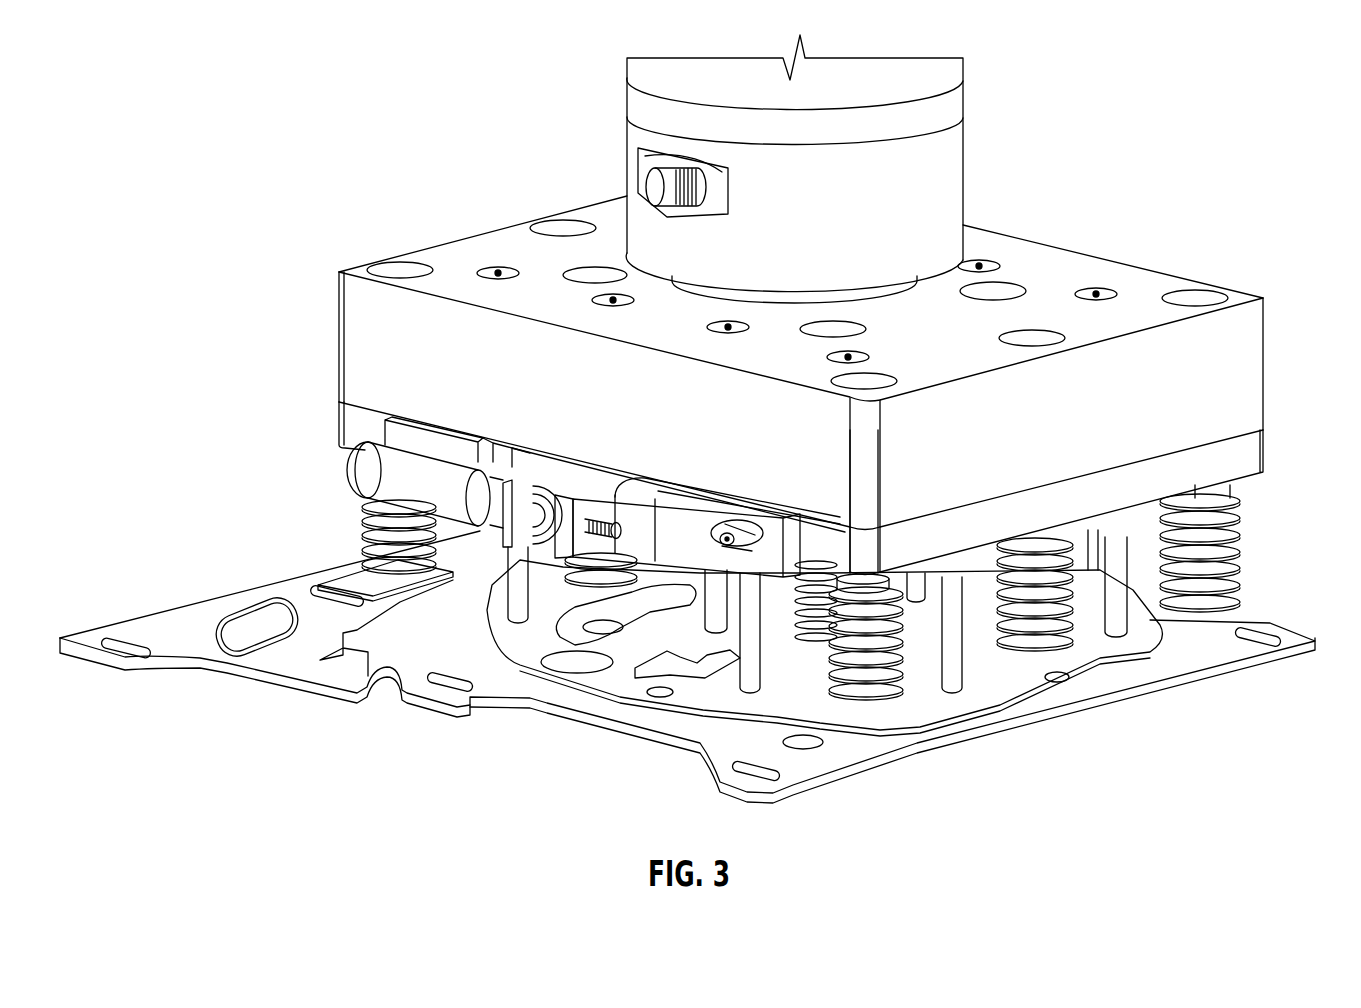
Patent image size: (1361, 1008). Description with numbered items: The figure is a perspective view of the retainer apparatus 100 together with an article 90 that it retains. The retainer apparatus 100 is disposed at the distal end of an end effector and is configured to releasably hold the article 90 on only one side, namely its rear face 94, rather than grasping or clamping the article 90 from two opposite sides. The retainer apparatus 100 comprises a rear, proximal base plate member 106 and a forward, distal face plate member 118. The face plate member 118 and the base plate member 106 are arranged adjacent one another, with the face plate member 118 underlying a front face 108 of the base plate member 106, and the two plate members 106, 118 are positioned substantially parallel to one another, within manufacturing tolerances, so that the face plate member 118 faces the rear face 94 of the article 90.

The retainer apparatus 100 is at (295, 203).
The base plate member 106 is at (356, 363).
The face plate member 118 is at (356, 425).
The front face 108 is at (1215, 441).
The article 90 is at (195, 686).
The rear face 94 is at (229, 633).